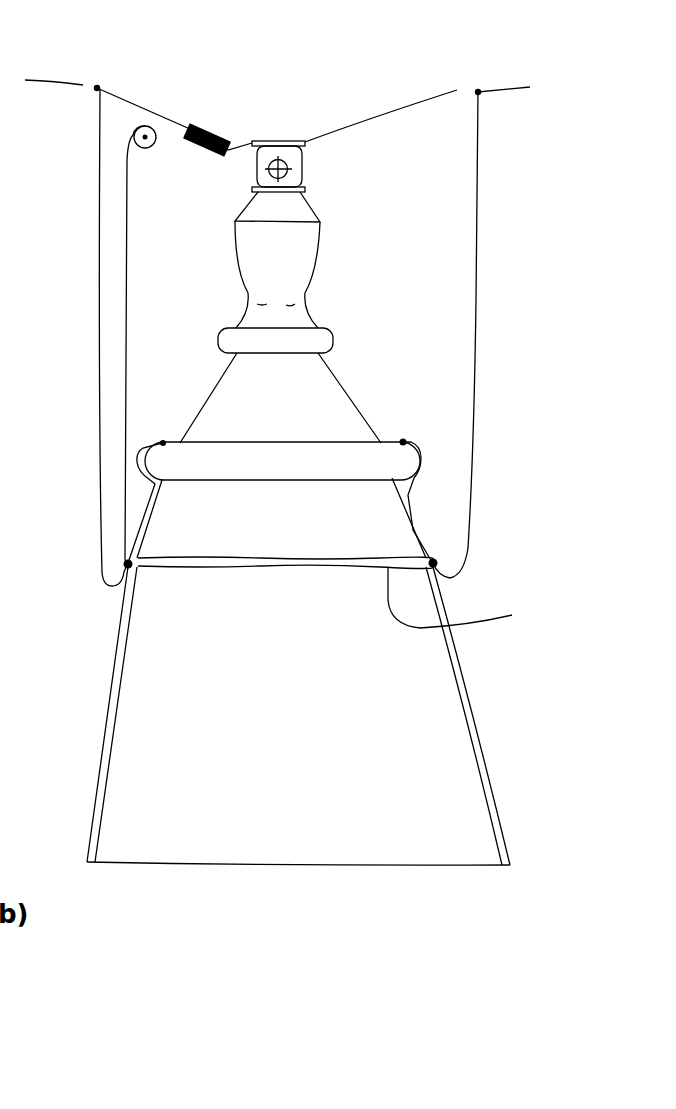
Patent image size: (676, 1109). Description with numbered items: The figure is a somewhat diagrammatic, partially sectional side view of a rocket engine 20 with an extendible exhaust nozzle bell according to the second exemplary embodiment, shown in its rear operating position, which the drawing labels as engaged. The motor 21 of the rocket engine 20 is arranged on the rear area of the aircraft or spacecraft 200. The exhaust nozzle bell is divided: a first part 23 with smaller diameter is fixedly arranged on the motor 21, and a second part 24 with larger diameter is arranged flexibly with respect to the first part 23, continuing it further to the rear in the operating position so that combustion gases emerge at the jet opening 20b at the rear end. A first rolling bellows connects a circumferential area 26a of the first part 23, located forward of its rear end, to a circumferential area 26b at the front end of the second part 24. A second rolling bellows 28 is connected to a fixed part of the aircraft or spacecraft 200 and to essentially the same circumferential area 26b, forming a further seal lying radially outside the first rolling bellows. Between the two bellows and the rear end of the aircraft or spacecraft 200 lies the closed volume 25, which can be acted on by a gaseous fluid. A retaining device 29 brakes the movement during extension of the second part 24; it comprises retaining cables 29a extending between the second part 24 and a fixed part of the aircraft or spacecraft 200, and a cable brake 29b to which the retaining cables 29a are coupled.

The rear area of the aircraft or spacecraft 200 is at (613, 117).
The retaining device 29 is at (88, 205).
The retaining cables 29a is at (128, 228).
The cable brake 29b is at (217, 132).
The motor 21 is at (292, 213).
The closed volume 25 is at (417, 285).
The first part of the exhaust nozzle bell 23 is at (207, 508).
The circumferential area of the first part 26a is at (407, 420).
The circumferential area of the second part 26b is at (452, 562).
The second rolling bellows 28 is at (477, 365).
The rocket engine 20 is at (93, 672).
The second part of the exhaust nozzle bell 24 is at (488, 773).
The jet opening 20b is at (298, 890).